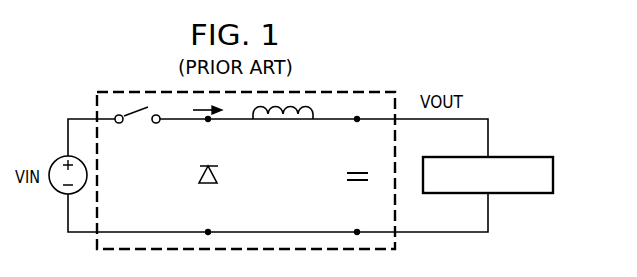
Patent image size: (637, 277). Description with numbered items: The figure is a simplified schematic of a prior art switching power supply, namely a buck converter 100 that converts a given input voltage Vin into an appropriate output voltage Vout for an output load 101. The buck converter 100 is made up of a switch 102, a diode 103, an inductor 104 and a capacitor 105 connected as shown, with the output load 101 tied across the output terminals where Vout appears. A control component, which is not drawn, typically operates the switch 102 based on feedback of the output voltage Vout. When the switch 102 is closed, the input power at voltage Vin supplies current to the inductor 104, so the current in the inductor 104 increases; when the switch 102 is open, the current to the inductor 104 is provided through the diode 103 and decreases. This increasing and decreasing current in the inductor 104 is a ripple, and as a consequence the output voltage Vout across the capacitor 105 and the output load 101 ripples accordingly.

The buck converter 100 is at (142, 88).
The output load 101 is at (556, 175).
The switch 102 is at (138, 124).
The diode 103 is at (200, 190).
The inductor 104 is at (282, 121).
The capacitor 105 is at (347, 176).